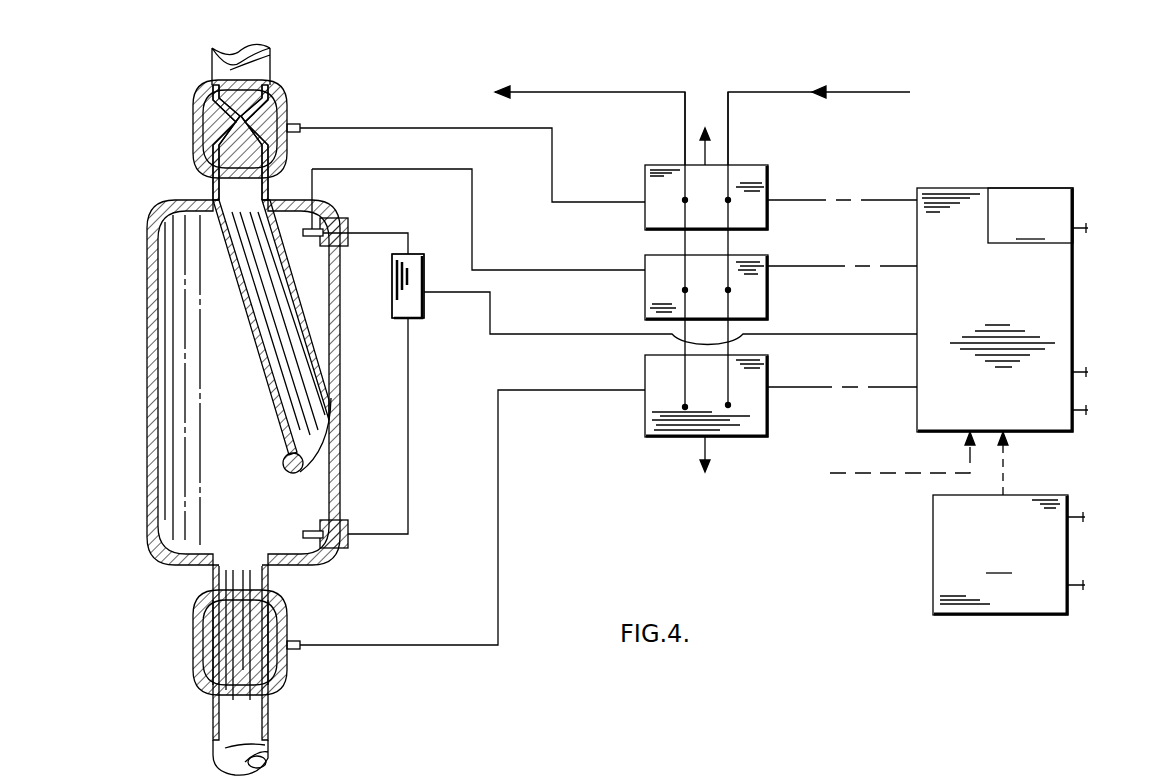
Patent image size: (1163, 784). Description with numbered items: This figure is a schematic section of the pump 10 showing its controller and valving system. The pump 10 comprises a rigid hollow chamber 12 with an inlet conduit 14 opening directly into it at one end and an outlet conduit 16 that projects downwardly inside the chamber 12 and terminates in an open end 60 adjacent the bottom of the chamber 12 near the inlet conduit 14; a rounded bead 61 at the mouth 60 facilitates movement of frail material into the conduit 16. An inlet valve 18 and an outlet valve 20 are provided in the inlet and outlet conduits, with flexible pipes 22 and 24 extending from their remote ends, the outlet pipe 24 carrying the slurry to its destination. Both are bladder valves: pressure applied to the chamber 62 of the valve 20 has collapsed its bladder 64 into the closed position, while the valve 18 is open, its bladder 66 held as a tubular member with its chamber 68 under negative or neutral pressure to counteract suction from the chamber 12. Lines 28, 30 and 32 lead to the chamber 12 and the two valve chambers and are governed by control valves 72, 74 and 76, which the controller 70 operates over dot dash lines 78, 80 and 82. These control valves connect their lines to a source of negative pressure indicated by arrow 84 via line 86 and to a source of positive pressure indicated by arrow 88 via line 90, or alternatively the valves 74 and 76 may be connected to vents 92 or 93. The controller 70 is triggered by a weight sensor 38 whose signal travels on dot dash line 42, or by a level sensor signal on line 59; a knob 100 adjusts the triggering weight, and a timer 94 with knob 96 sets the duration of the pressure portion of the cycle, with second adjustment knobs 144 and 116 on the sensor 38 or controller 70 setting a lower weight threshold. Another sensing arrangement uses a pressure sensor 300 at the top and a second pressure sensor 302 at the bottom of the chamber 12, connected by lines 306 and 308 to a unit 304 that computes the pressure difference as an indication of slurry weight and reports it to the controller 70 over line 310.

The pump 10 is at (134, 297).
The chamber 12 is at (150, 354).
The inlet conduit 14 is at (270, 594).
The outlet conduit 16 is at (242, 323).
The inlet valve 18 is at (280, 631).
The outlet valve 20 is at (280, 122).
The flexible pipe 22 is at (271, 736).
The outlet pipe 24 is at (268, 74).
The line 28 is at (432, 169).
The line 30 is at (498, 606).
The line 32 is at (436, 128).
The weight sensor 38 is at (1009, 555).
The dot dash line 42 is at (1004, 484).
The line 59 is at (896, 476).
The open end 60 is at (310, 459).
The rounded bead 61 is at (284, 466).
The chamber of bladder valve 62 is at (288, 132).
The bladder 64 is at (259, 148).
The bladder 66 is at (210, 665).
The chamber of valve 68 is at (288, 651).
The controller 70 is at (1071, 312).
The control valve 72 is at (768, 310).
The control valve 74 is at (744, 437).
The control valve 76 is at (768, 218).
The dot dash line 78 is at (835, 266).
The dot dash line 80 is at (814, 387).
The dot dash line 82 is at (812, 200).
The negative pressure source arrow 84 is at (580, 92).
The line 86 is at (682, 144).
The positive pressure source arrow 88 is at (862, 92).
The line 90 is at (729, 144).
The vent 92 is at (704, 462).
The vent 93 is at (705, 128).
The timer 94 is at (1030, 215).
The knob 96 is at (1087, 228).
The knob 100 is at (1084, 410).
The knob 116 is at (1086, 372).
The knob 144 is at (1084, 580).
The pressure sensor 300 is at (348, 220).
The second pressure sensor 302 is at (342, 548).
The unit 304 is at (424, 318).
The line 306 is at (418, 254).
The line 308 is at (415, 464).
The line 310 is at (530, 334).